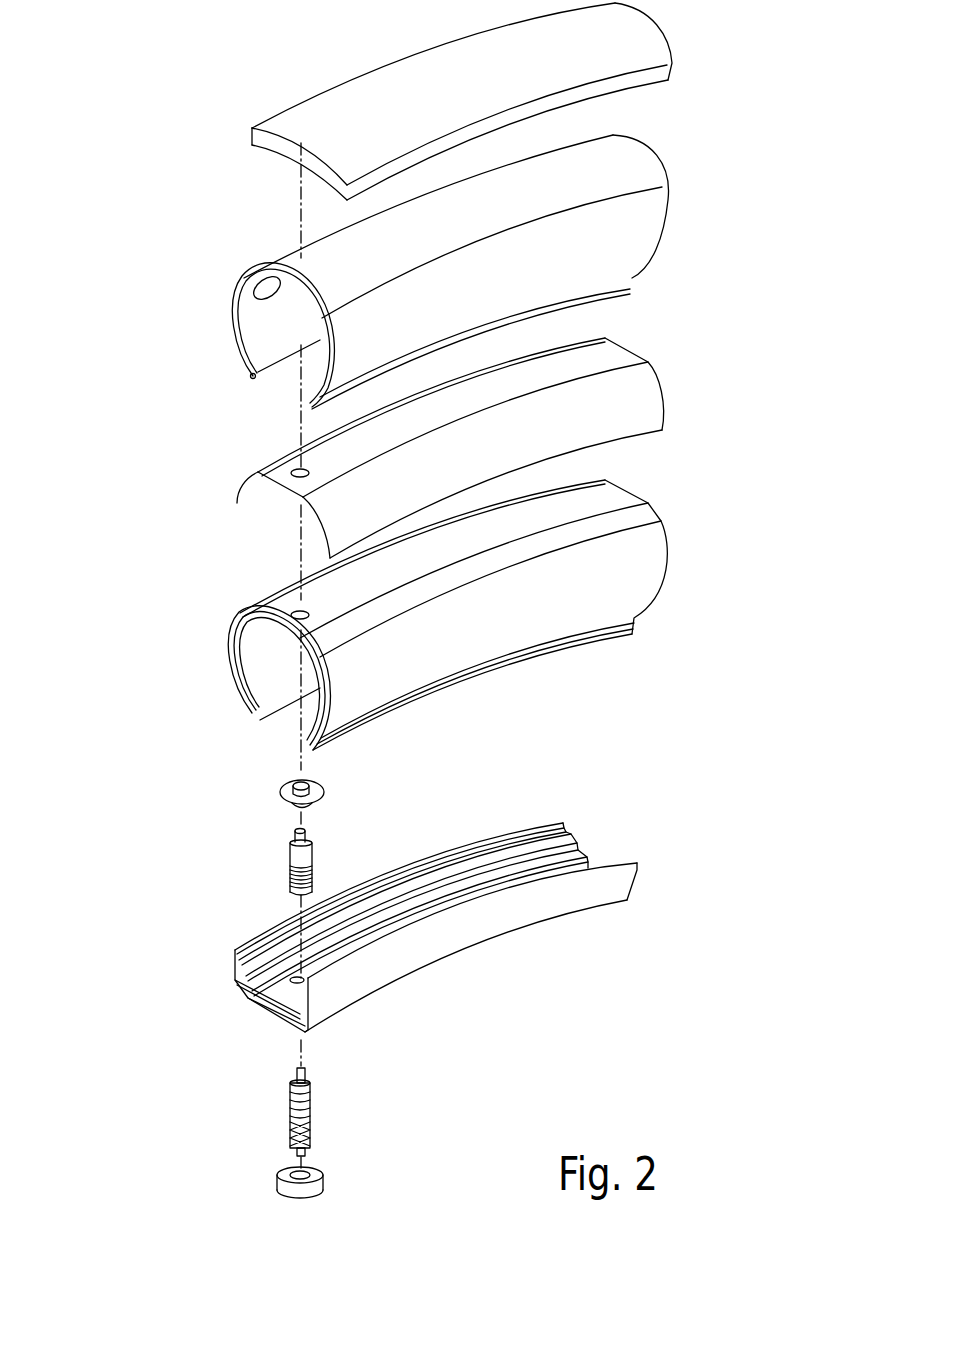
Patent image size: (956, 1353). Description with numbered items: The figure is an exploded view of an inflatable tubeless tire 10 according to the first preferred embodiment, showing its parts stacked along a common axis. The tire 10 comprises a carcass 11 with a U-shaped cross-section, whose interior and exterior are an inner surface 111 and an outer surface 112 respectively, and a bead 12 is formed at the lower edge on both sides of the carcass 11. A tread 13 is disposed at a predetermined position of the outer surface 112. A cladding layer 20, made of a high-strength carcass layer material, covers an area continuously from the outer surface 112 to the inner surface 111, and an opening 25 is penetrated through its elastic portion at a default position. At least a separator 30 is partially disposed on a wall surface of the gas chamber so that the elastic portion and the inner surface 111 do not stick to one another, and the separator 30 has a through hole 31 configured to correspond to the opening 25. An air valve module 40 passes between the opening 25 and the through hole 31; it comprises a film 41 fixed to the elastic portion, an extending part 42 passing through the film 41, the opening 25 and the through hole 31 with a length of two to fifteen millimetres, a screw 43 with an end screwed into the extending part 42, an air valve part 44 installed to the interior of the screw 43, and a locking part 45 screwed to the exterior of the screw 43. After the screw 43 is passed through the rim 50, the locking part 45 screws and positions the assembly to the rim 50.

The inflatable tubeless tire 10 is at (152, 153).
The carcass 11 is at (142, 222).
The inner surface 111 is at (272, 284).
The outer surface 112 is at (231, 306).
The bead 12 is at (252, 377).
The tread 13 is at (353, 88).
The cladding layer 20 is at (227, 625).
The opening 25 is at (297, 622).
The separator 30 is at (237, 485).
The through hole 31 is at (299, 478).
The air valve module 40 is at (190, 727).
The film 41 is at (284, 792).
The extending part 42 is at (298, 781).
The screw 43 is at (291, 853).
The air valve part 44 is at (291, 1112).
The locking part 45 is at (286, 1173).
The rim 50 is at (507, 940).